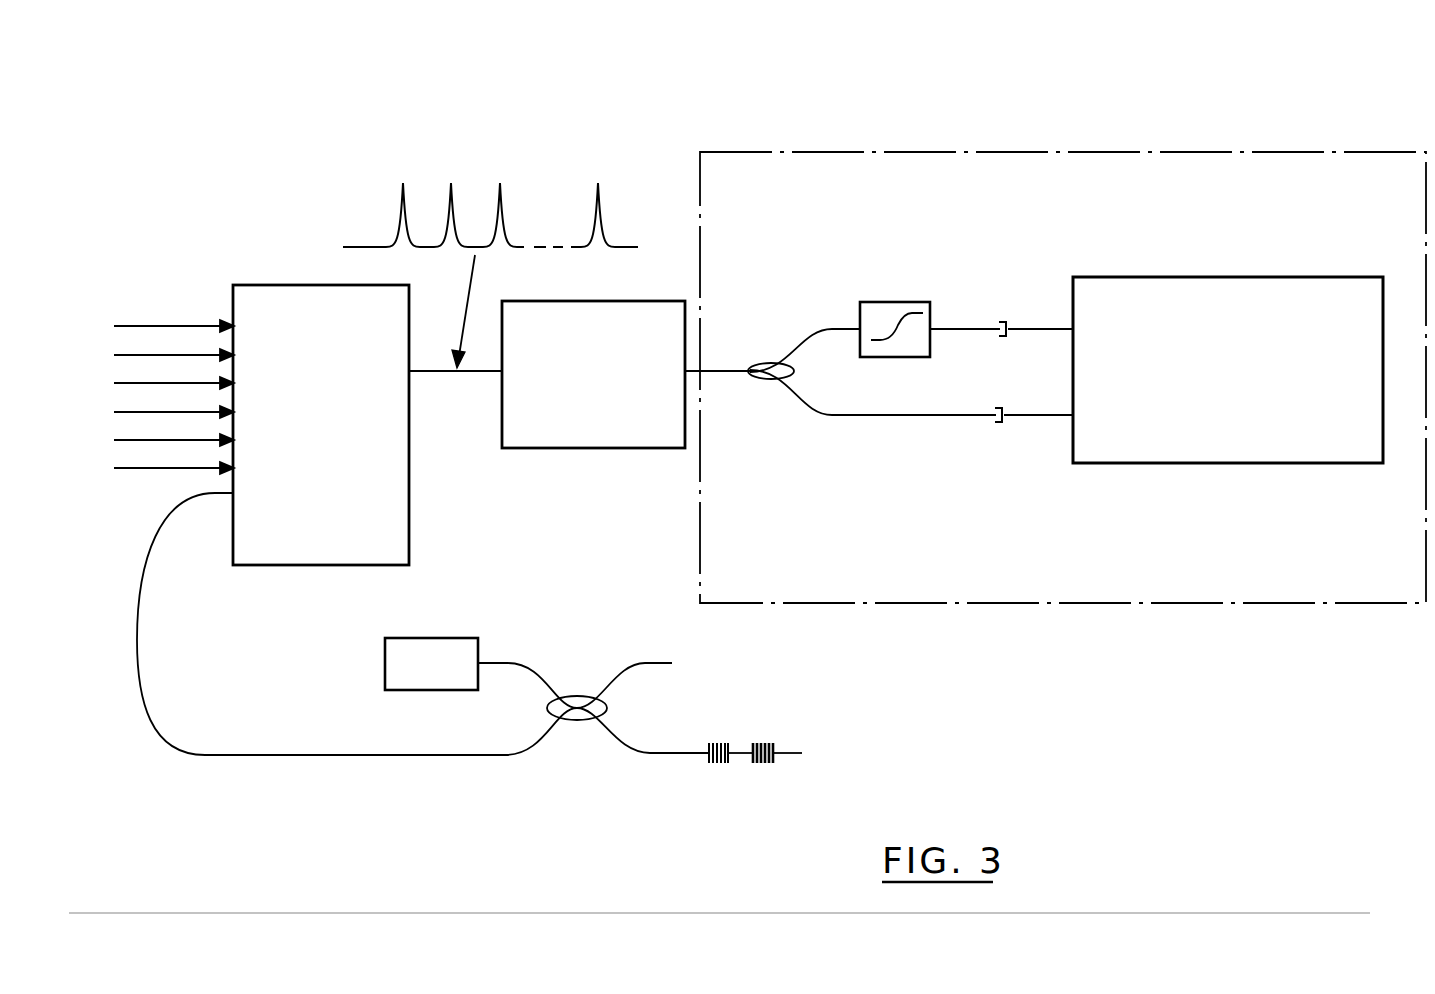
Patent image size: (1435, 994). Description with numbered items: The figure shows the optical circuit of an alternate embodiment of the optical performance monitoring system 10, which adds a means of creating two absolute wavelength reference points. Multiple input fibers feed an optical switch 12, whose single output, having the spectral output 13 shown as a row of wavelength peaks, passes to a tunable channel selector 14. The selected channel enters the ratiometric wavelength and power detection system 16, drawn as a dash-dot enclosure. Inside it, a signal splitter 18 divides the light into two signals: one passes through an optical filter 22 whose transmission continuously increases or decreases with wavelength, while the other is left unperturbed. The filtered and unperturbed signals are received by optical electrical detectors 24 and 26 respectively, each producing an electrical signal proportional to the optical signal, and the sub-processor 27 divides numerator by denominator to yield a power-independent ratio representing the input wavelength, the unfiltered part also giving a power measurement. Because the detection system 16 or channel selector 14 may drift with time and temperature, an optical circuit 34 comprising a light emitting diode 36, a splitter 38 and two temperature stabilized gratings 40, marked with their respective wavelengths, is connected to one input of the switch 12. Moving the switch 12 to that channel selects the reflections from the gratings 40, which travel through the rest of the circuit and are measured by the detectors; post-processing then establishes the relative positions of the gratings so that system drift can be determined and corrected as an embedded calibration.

The optical performance monitoring system 10 is at (846, 102).
The optical switch 12 is at (346, 566).
The spectral output 13 is at (600, 212).
The tunable channel selector 14 is at (626, 450).
The ratiometric wavelength and power detection system 16 is at (1224, 152).
The signal splitter 18 is at (778, 381).
The optical filter 22 is at (914, 302).
The optical electrical detector 24 is at (1006, 320).
The optical electrical detector 26 is at (999, 426).
The sub-processor 27 is at (1215, 277).
The optical circuit 34 is at (607, 790).
The light emitting diode 36 is at (466, 638).
The splitter 38 is at (583, 695).
The temperature stabilized gratings 40 is at (722, 742).